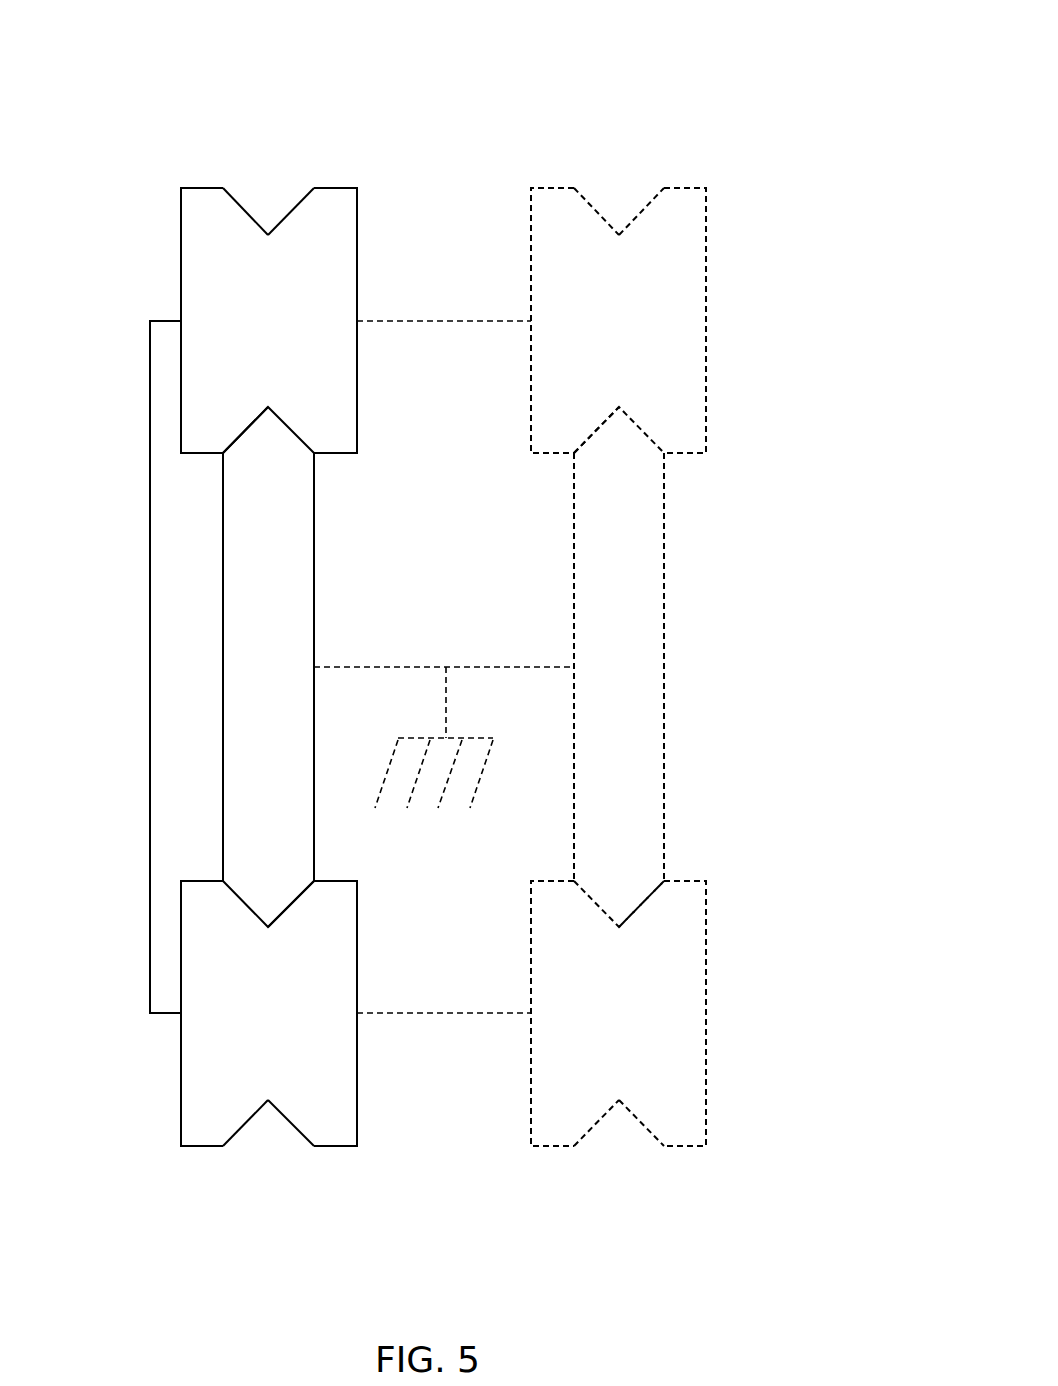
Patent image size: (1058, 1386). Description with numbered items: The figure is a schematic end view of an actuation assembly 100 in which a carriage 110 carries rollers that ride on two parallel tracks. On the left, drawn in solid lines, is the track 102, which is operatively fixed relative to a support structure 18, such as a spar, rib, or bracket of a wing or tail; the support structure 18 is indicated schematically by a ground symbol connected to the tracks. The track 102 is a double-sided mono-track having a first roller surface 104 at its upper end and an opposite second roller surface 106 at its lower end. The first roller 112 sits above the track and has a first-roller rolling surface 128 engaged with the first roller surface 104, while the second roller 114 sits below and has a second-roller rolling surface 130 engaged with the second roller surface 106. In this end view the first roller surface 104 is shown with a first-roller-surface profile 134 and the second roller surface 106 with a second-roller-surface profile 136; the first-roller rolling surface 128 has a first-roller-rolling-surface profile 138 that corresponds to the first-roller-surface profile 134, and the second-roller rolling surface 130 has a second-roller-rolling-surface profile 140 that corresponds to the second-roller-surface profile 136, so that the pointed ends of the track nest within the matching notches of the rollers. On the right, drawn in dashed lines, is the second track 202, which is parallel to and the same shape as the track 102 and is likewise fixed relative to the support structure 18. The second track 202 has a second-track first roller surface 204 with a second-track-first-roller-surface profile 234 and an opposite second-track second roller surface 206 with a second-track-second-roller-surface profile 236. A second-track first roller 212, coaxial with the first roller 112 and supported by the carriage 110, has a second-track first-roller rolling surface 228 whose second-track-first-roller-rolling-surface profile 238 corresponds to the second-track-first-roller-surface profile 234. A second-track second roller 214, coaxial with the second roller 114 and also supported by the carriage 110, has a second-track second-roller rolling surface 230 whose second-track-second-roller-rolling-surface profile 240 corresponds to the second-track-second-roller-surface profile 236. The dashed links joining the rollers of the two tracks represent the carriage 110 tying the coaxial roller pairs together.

The actuation assembly 100 is at (776, 57).
The track 102 is at (187, 640).
The first roller surface 104 is at (295, 423).
The second roller surface 106 is at (245, 909).
The carriage 110 is at (150, 575).
The first roller 112 is at (165, 370).
The second roller 114 is at (168, 1078).
The first-roller rolling surface 128 is at (243, 202).
The first-roller-rolling-surface profile 138 is at (292, 205).
The second-roller rolling surface 130 is at (244, 1132).
The second-roller-rolling-surface profile 140 is at (292, 1130).
The first-roller-surface profile 134 is at (243, 422).
The second-roller-surface profile 136 is at (292, 904).
The support structure 18 is at (493, 738).
The second track 202 is at (700, 651).
The second-track first roller surface 204 is at (650, 435).
The second-track second roller surface 206 is at (597, 903).
The second-track first roller 212 is at (722, 320).
The second-track second roller 214 is at (733, 1048).
The second-track first-roller rolling surface 228 is at (595, 203).
The second-track-first-roller-rolling-surface profile 238 is at (643, 205).
The second-track second-roller rolling surface 230 is at (595, 1132).
The second-track-second-roller-rolling-surface profile 240 is at (643, 1130).
The second-track-first-roller-surface profile 234 is at (598, 432).
The second-track-second-roller-surface profile 236 is at (643, 903).